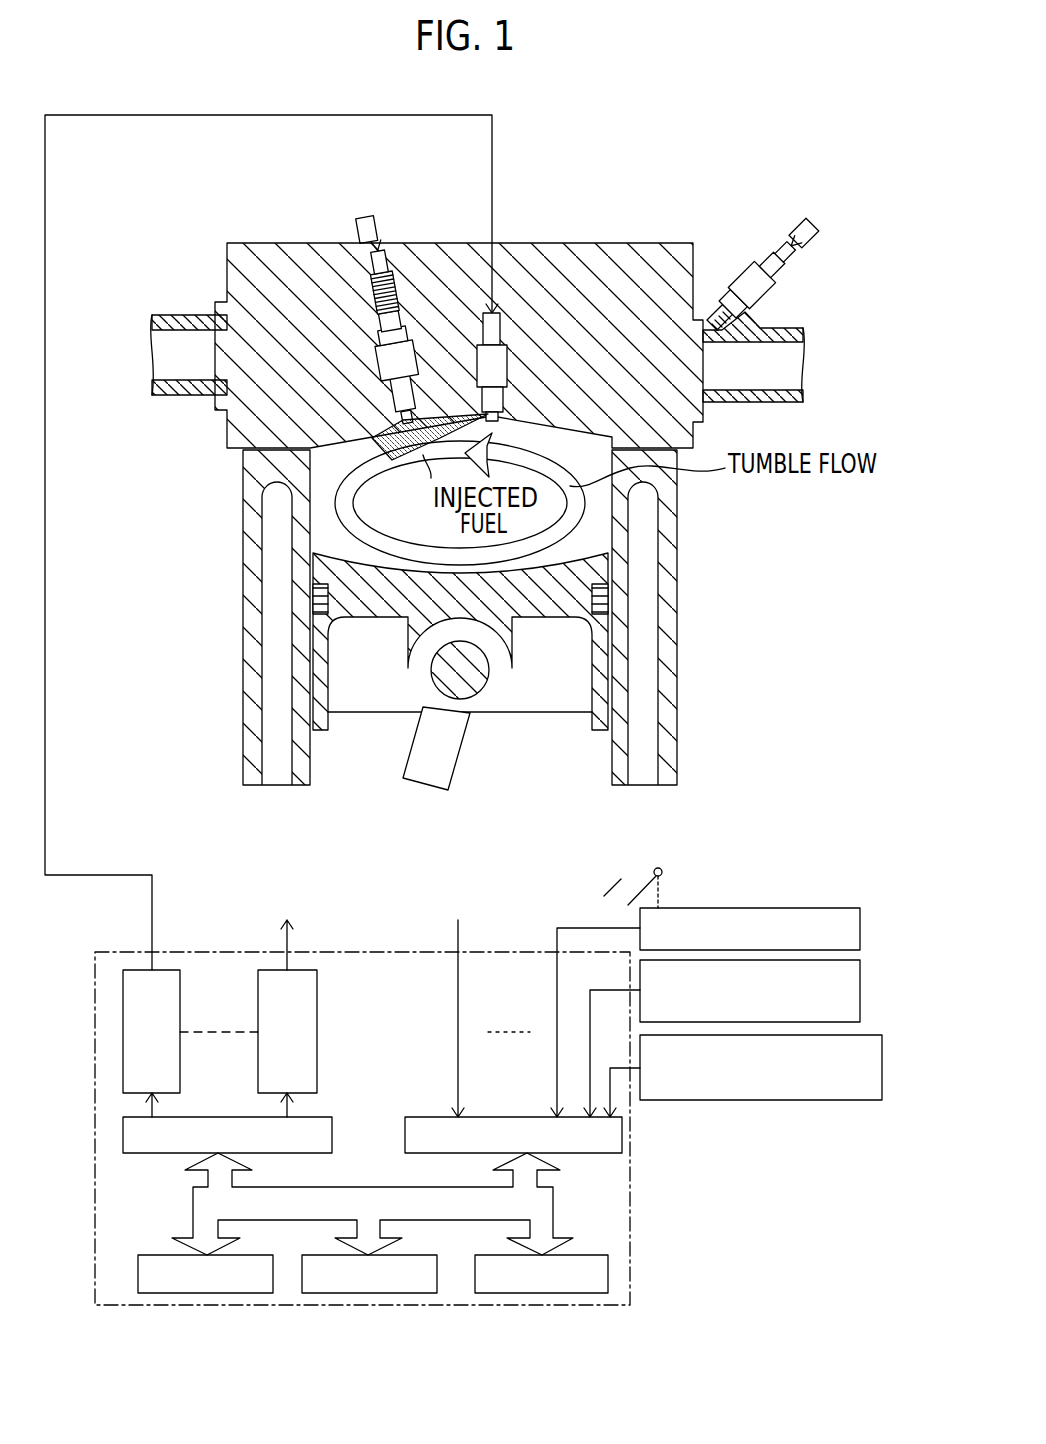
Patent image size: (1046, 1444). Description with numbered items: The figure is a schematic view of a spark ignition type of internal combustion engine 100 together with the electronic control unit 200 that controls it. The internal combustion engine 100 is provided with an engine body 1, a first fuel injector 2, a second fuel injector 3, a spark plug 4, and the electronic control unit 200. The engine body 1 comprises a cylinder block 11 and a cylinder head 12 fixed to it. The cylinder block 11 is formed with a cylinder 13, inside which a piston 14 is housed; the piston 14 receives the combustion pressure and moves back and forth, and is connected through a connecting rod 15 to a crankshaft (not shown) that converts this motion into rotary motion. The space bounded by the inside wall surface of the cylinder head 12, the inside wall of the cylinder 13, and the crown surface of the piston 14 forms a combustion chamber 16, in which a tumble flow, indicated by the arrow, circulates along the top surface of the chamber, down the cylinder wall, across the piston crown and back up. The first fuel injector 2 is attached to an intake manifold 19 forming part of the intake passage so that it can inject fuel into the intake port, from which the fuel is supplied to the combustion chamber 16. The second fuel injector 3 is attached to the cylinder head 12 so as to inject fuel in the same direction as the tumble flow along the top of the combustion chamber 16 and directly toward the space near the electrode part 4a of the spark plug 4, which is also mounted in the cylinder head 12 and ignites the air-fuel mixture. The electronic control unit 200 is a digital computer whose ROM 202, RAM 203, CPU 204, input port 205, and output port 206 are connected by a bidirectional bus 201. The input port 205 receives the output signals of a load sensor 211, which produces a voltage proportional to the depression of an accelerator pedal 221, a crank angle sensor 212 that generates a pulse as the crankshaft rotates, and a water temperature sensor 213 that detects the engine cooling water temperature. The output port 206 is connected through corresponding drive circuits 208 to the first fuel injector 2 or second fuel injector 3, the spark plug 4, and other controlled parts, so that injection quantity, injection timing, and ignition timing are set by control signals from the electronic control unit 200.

The internal combustion engine 100 is at (148, 215).
The engine body 1 is at (397, 514).
The cylinder block 11 is at (243, 488).
The cylinder head 12 is at (233, 420).
The cylinder 13 is at (605, 539).
The piston 14 is at (313, 640).
The connecting rod 15 is at (417, 765).
The combustion chamber 16 is at (453, 549).
The first fuel injector 2 is at (760, 293).
The second fuel injector 3 is at (497, 367).
The spark plug 4 is at (392, 325).
The electrode part 4a is at (402, 466).
The intake manifold 19 is at (785, 327).
The electronic control unit 200 is at (363, 952).
The bidirectional bus 201 is at (555, 1208).
The ROM 202 is at (208, 1293).
The RAM 203 is at (383, 1293).
The CPU 204 is at (575, 1293).
The input port 205 is at (410, 1117).
The output port 206 is at (323, 1117).
The drive circuit 208 is at (258, 983).
The load sensor 211 is at (810, 906).
The crank angle sensor 212 is at (862, 990).
The water temperature sensor 213 is at (882, 1068).
The accelerator pedal 221 is at (638, 868).